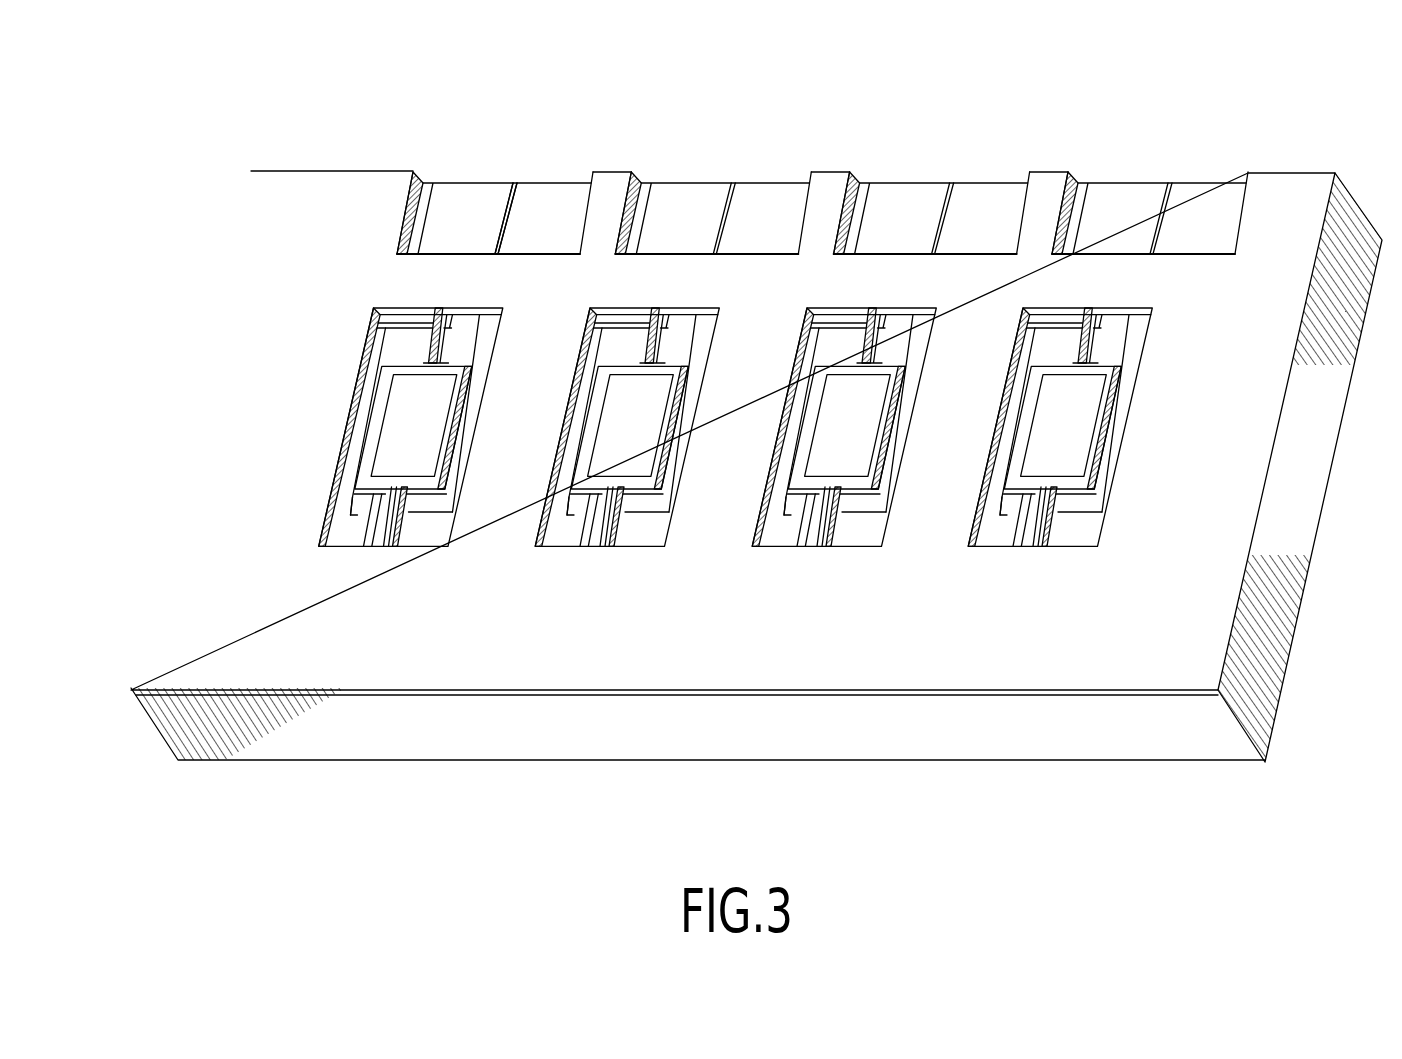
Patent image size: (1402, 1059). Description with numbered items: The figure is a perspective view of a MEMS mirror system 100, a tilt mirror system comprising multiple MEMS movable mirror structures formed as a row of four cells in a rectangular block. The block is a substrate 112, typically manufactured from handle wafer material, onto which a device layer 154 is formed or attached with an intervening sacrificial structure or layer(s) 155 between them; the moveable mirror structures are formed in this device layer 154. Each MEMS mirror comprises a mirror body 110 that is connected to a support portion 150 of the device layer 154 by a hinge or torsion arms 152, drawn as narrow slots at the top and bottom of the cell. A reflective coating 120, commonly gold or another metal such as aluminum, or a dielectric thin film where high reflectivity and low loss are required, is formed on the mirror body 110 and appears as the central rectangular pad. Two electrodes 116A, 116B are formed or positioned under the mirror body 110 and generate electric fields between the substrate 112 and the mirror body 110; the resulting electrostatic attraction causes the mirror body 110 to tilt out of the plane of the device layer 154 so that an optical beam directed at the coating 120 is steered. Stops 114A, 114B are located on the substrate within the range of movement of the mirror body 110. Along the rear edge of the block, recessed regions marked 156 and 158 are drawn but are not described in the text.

The MEMS mirror system 100 is at (1029, 129).
The mirror body 110 is at (399, 439).
The substrate 112 is at (635, 743).
The stop 114A is at (355, 540).
The stop 114B is at (465, 345).
The electrode 116A is at (384, 504).
The electrode 116B is at (442, 503).
The reflective coating 120 is at (397, 436).
The support portion 150 is at (363, 315).
The torsion arms 152 is at (420, 344).
The device layer 154 is at (221, 692).
The sacrificial structure 155 is at (894, 697).
The groove 156 is at (468, 208).
The groove divider 158 is at (555, 208).